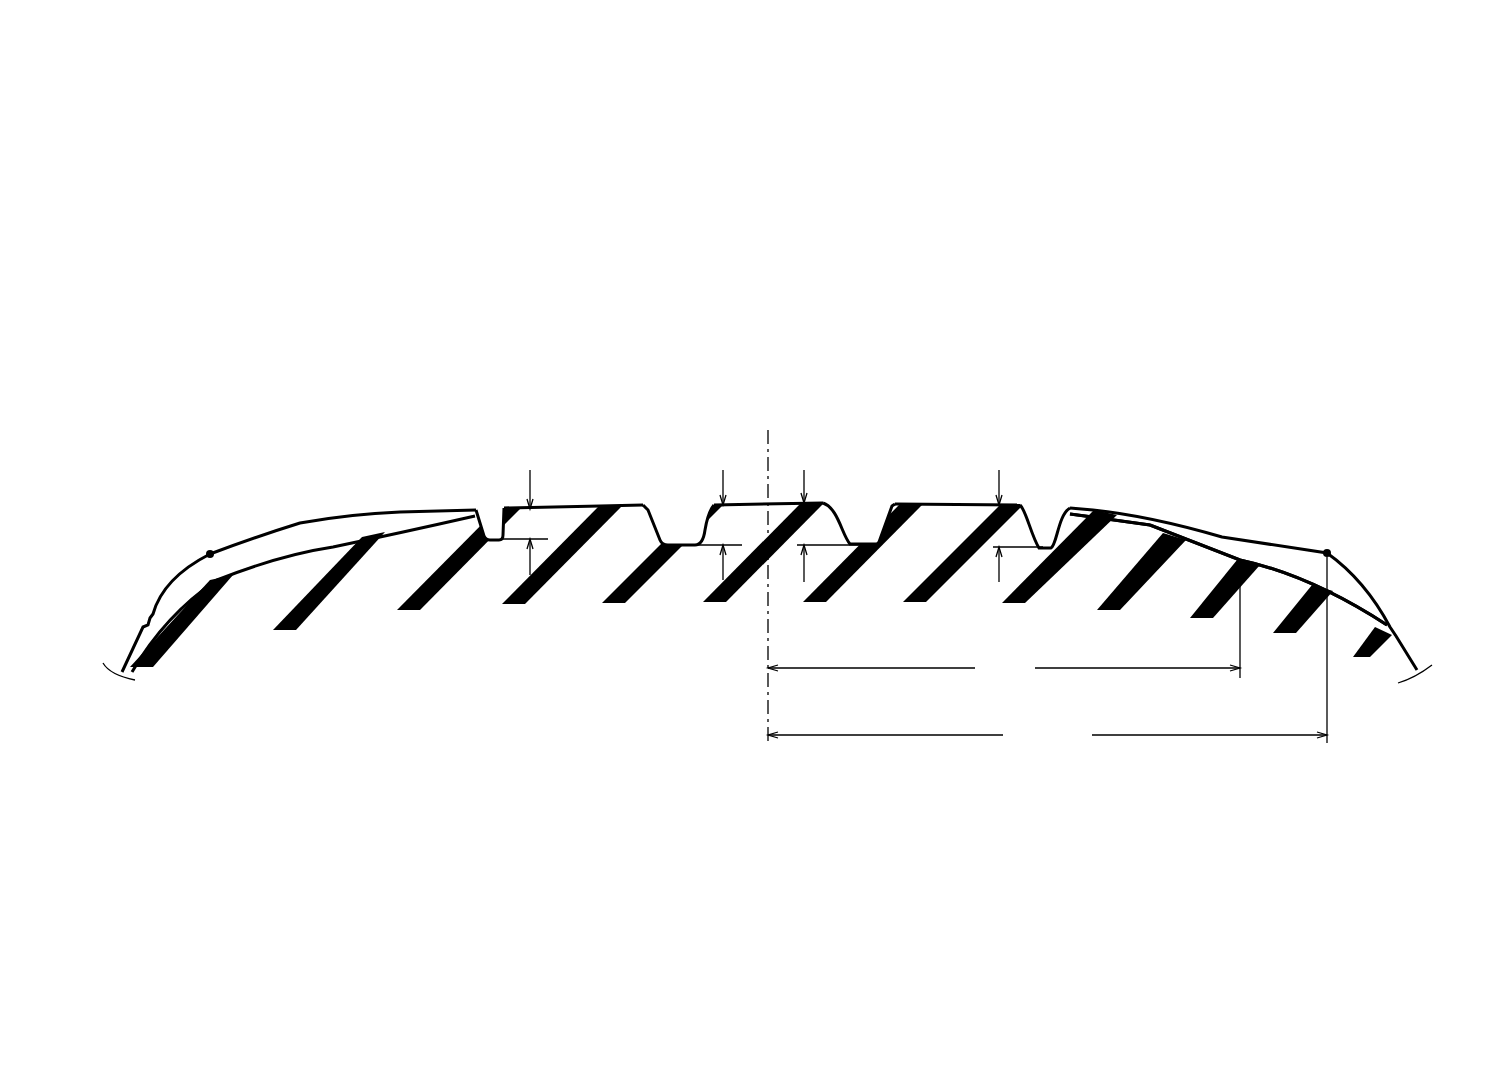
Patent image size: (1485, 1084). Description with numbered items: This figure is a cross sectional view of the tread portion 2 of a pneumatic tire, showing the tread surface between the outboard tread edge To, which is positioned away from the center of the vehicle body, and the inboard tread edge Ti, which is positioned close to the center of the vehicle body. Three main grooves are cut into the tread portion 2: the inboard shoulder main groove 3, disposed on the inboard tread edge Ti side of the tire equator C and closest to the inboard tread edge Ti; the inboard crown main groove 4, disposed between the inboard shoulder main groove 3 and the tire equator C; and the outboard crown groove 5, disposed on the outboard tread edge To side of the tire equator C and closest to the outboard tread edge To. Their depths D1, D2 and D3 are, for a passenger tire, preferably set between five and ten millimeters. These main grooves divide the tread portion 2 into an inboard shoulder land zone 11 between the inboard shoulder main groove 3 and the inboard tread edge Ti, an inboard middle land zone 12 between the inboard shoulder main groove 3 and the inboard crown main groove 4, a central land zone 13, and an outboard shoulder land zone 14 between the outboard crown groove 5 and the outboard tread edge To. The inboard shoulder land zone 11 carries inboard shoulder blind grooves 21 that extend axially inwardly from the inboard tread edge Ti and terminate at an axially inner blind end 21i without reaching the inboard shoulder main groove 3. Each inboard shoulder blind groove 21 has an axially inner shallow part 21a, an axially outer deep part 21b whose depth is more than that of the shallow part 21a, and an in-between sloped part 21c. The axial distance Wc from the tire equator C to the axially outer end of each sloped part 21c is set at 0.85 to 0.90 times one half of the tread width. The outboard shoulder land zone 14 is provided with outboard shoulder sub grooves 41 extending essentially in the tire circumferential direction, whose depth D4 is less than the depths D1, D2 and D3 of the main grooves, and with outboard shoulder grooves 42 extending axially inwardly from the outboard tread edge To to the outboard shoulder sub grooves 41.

The tread portion 2 is at (0, 0).
The inboard shoulder main groove 3 is at (1051, 452).
The inboard crown main groove 4 is at (860, 445).
The outboard crown groove 5 is at (668, 444).
The inboard shoulder land zone 11 is at (1243, 518).
The inboard middle land zone 12 is at (957, 445).
The central land zone 13 is at (768, 425).
The outboard shoulder land zone 14 is at (573, 437).
The inboard shoulder blind groove 21 is at (772, 542).
The axially inner shallow part 21a is at (1103, 512).
The axially outer deep part 21b is at (1298, 560).
The in-between sloped part 21c is at (1222, 537).
The axially inner blind end 21i is at (1090, 510).
The outboard shoulder sub groove 41 is at (490, 507).
The outboard shoulder groove 42 is at (326, 533).
The outboard tread edge To is at (210, 554).
The inboard tread edge Ti is at (1327, 553).
The tire equator C is at (769, 569).
The depth of inboard shoulder main groove D1 is at (1000, 530).
The depth of inboard crown main groove D2 is at (803, 522).
The depth of outboard crown groove D3 is at (725, 523).
The depth of outboard shoulder sub groove D4 is at (528, 522).
The axial distance Wc is at (1004, 622).